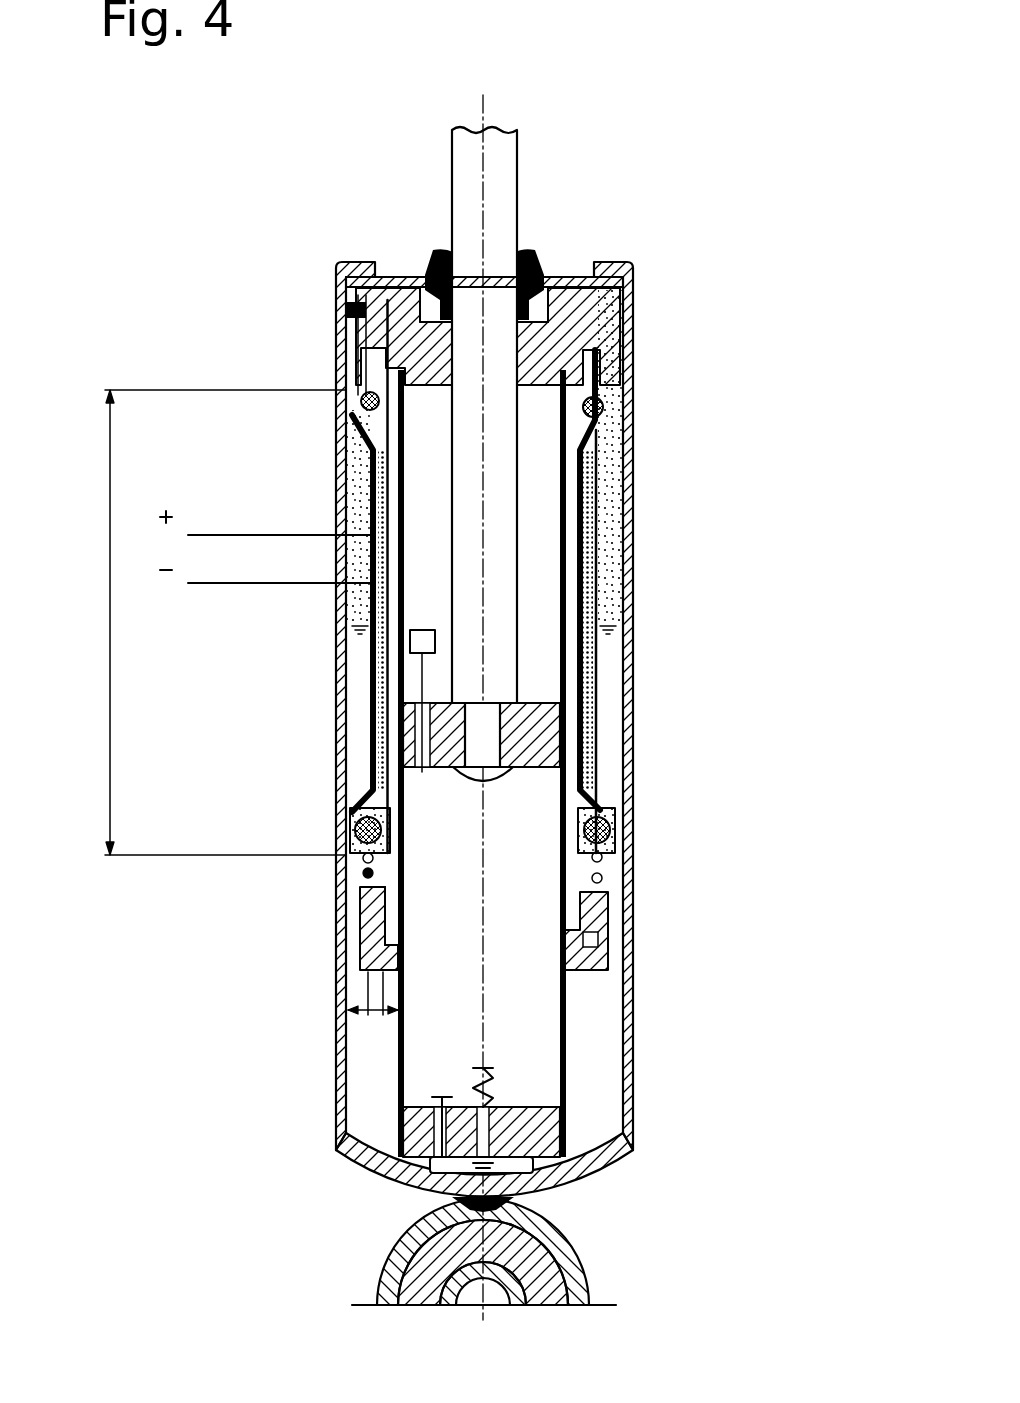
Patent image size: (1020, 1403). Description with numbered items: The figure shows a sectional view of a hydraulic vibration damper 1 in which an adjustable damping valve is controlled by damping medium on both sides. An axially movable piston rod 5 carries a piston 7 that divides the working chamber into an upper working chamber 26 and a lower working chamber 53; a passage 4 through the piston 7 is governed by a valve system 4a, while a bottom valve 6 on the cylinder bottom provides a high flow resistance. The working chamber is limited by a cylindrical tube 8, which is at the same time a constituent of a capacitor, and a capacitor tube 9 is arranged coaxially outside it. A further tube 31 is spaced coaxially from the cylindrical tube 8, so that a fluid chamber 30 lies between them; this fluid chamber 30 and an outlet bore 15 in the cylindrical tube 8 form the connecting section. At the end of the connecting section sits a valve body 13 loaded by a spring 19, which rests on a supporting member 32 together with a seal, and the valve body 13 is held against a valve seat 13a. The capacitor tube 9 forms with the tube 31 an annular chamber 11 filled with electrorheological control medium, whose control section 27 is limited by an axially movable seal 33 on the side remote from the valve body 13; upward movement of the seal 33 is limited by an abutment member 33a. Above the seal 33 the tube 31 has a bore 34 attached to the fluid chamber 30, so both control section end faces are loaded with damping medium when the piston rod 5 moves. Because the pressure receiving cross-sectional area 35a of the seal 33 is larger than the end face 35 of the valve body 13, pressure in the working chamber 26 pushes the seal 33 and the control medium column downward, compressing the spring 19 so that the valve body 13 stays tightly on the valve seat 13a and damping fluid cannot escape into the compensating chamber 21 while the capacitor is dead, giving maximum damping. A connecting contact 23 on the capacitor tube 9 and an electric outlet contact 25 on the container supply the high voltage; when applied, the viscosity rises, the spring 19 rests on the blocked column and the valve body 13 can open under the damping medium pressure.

The vibration damper 1 is at (230, 1096).
The passage 4 is at (418, 730).
The valve system 4a is at (412, 636).
The piston rod 5 is at (503, 160).
The bottom valve 6 is at (540, 1130).
The piston 7 is at (540, 730).
The cylindrical tube 8 is at (406, 870).
The capacitor tube 9 is at (598, 502).
The annular chamber 11 is at (597, 652).
The valve body 13 is at (370, 905).
The valve seat 13a is at (607, 948).
The outlet bore 15 is at (363, 420).
The spring 19 is at (360, 872).
The compensating chamber 21 is at (590, 1050).
The connecting contact 23 is at (266, 519).
The electric outlet contact 25 is at (266, 567).
The working chamber 26 is at (540, 553).
The control section 27 is at (108, 628).
The fluid chamber 30 is at (392, 675).
The tube 31 is at (600, 463).
The supporting member 32 is at (600, 840).
The seal 33 is at (602, 400).
The abutment member 33a is at (355, 397).
The bore 34 is at (345, 370).
The end face 35 is at (382, 1012).
The pressure receiving cross-sectional area 35a is at (605, 357).
The lower working chamber 53 is at (415, 1058).